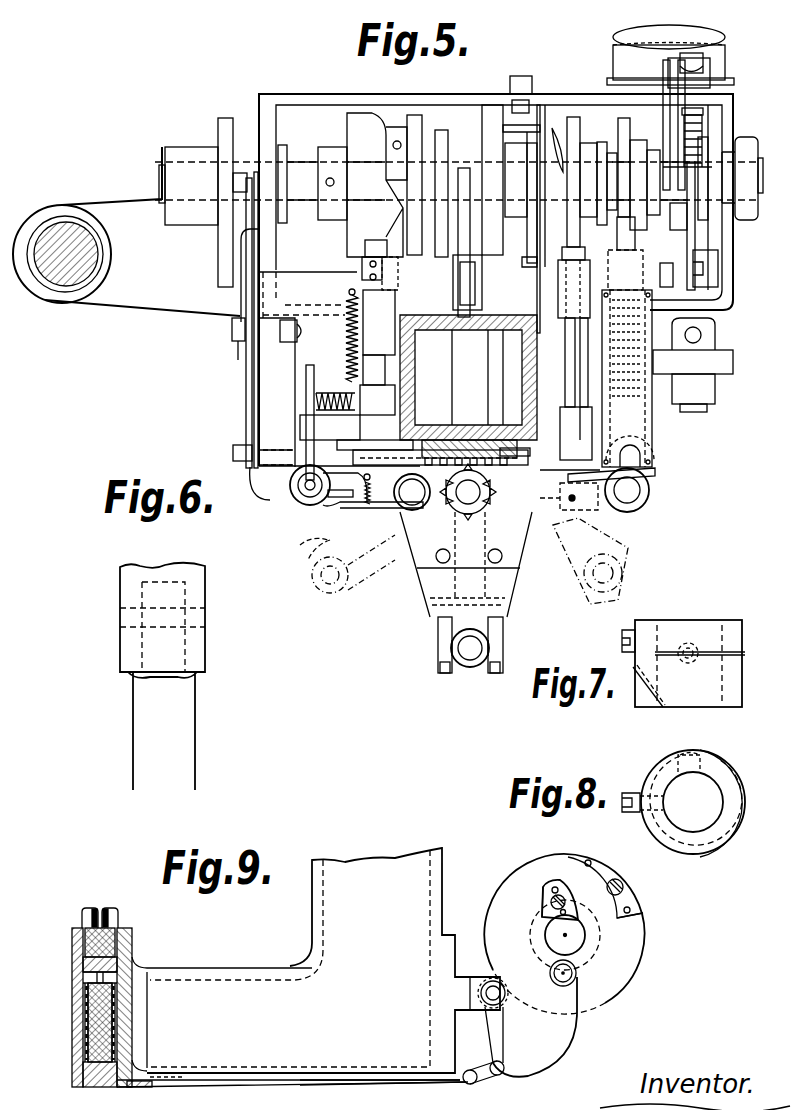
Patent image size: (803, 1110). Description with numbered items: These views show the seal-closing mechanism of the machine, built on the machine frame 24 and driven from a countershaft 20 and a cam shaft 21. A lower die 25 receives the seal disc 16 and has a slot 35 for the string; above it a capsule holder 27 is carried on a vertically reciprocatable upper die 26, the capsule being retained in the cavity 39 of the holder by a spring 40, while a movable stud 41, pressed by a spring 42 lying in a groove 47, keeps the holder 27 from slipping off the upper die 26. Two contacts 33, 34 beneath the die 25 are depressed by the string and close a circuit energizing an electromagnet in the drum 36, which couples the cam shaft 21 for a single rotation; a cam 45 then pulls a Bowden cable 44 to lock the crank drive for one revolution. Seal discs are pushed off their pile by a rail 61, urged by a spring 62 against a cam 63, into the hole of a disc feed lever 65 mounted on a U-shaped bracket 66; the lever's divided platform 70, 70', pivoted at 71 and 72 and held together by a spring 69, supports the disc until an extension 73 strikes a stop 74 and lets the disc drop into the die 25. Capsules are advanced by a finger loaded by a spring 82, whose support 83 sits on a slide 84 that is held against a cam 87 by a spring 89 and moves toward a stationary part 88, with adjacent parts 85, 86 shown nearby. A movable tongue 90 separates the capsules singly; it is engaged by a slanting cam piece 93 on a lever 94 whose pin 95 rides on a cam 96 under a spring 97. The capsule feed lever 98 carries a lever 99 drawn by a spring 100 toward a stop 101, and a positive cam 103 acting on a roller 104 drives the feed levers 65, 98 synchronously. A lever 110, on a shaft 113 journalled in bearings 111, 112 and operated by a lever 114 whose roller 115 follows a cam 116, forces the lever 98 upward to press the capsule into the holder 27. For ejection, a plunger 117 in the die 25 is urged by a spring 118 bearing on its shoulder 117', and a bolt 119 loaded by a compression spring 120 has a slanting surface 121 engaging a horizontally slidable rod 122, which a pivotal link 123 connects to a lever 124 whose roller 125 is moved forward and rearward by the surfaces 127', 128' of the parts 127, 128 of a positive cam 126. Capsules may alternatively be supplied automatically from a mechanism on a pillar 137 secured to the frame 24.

In FIG. 5, the disc 16 is at (632, 449).
In FIG. 5, the countershaft 20 is at (700, 408).
In FIG. 5, the cam shaft 21 is at (760, 187).
In FIG. 5, the machine frame 24 is at (531, 363).
In FIG. 9, the machine frame 24 is at (352, 890).
In FIG. 5, the lower die 25 is at (468, 667).
In FIG. 9, the lower die 25 is at (118, 916).
In FIG. 6, the upper die 26 is at (180, 738).
In FIG. 7, the capsule holder 27 is at (744, 622).
In FIG. 5, the contact 33 is at (438, 626).
In FIG. 5, the contact 34 is at (504, 630).
In FIG. 9, the slot 35 is at (100, 908).
In FIG. 5, the drum 36 is at (670, 55).
In FIG. 8, the cavity 39 is at (693, 802).
In FIG. 7, the spring 40 is at (637, 707).
In FIG. 7, the movable stud 41 is at (700, 688).
In FIG. 8, the spring 42 is at (735, 768).
In FIG. 5, the Bowden cable 44 is at (524, 219).
In FIG. 5, the cam 45 is at (530, 250).
In FIG. 5, the groove 47 is at (512, 570).
In FIG. 8, the groove 47 is at (660, 838).
In FIG. 5, the rail 61 is at (634, 261).
In FIG. 5, the spring 62 is at (690, 253).
In FIG. 5, the cam 63 is at (622, 138).
In FIG. 5, the disc feed lever 65 is at (650, 491).
In FIG. 5, the U-shaped bracket 66 is at (503, 425).
In FIG. 5, the spring 69 is at (574, 502).
In FIG. 5, the platform part 70 is at (590, 565).
In FIG. 5, the platform part 70' is at (627, 563).
In FIG. 5, the pivot 71 is at (576, 506).
In FIG. 5, the pivot 72 is at (656, 473).
In FIG. 5, the extension 73 is at (520, 560).
In FIG. 5, the stop 74 is at (416, 567).
In FIG. 5, the spring 82 is at (331, 393).
In FIG. 5, the support 83 is at (388, 399).
In FIG. 5, the slide 84 is at (378, 373).
In FIG. 5, the screw 85 is at (401, 282).
In FIG. 5, the guide 86 is at (406, 320).
In FIG. 5, the cam 87 is at (437, 130).
In FIG. 5, the stationary part 88 is at (372, 434).
In FIG. 5, the spring 89 is at (350, 334).
In FIG. 5, the movable tongue 90 is at (284, 432).
In FIG. 5, the slanting cam piece 93 is at (250, 449).
In FIG. 5, the lever 94 is at (250, 385).
In FIG. 5, the pin 95 is at (222, 183).
In FIG. 5, the cam 96 is at (232, 134).
In FIG. 5, the spring 97 is at (236, 297).
In FIG. 5, the capsule feed lever 98 is at (305, 500).
In FIG. 5, the lever 99 is at (318, 498).
In FIG. 5, the spring 100 is at (356, 495).
In FIG. 5, the stop 101 is at (369, 501).
In FIG. 5, the positive cam 103 is at (361, 134).
In FIG. 5, the roller 104 is at (364, 256).
In FIG. 5, the lever 110 is at (575, 442).
In FIG. 5, the bearing 111 is at (586, 407).
In FIG. 5, the bearing 112 is at (594, 362).
In FIG. 5, the shaft 113 is at (567, 358).
In FIG. 5, the lever 114 is at (567, 289).
In FIG. 5, the roller 115 is at (572, 256).
In FIG. 5, the cam 116 is at (573, 117).
In FIG. 9, the plunger 117 is at (50, 1007).
In FIG. 9, the shoulder 117' is at (76, 976).
In FIG. 9, the spring 118 is at (130, 939).
In FIG. 9, the bolt 119 is at (85, 993).
In FIG. 9, the compression spring 120 is at (93, 1011).
In FIG. 9, the slanting surface 121 is at (122, 1081).
In FIG. 5, the horizontally slidable rod 122 is at (469, 377).
In FIG. 9, the horizontally slidable rod 122 is at (283, 1081).
In FIG. 5, the pivotal link 123 is at (481, 282).
In FIG. 9, the pivotal link 123 is at (485, 1065).
In FIG. 5, the lever 124 is at (469, 172).
In FIG. 9, the lever 124 is at (552, 1028).
In FIG. 5, the roller 125 is at (500, 180).
In FIG. 9, the roller 125 is at (577, 975).
In FIG. 5, the positive cam 126 is at (498, 106).
In FIG. 9, the cam part 127 is at (557, 871).
In FIG. 9, the surface 127' is at (512, 876).
In FIG. 9, the cam part 128 is at (614, 887).
In FIG. 9, the surface 128' is at (654, 899).
In FIG. 5, the pillar 137 is at (90, 268).